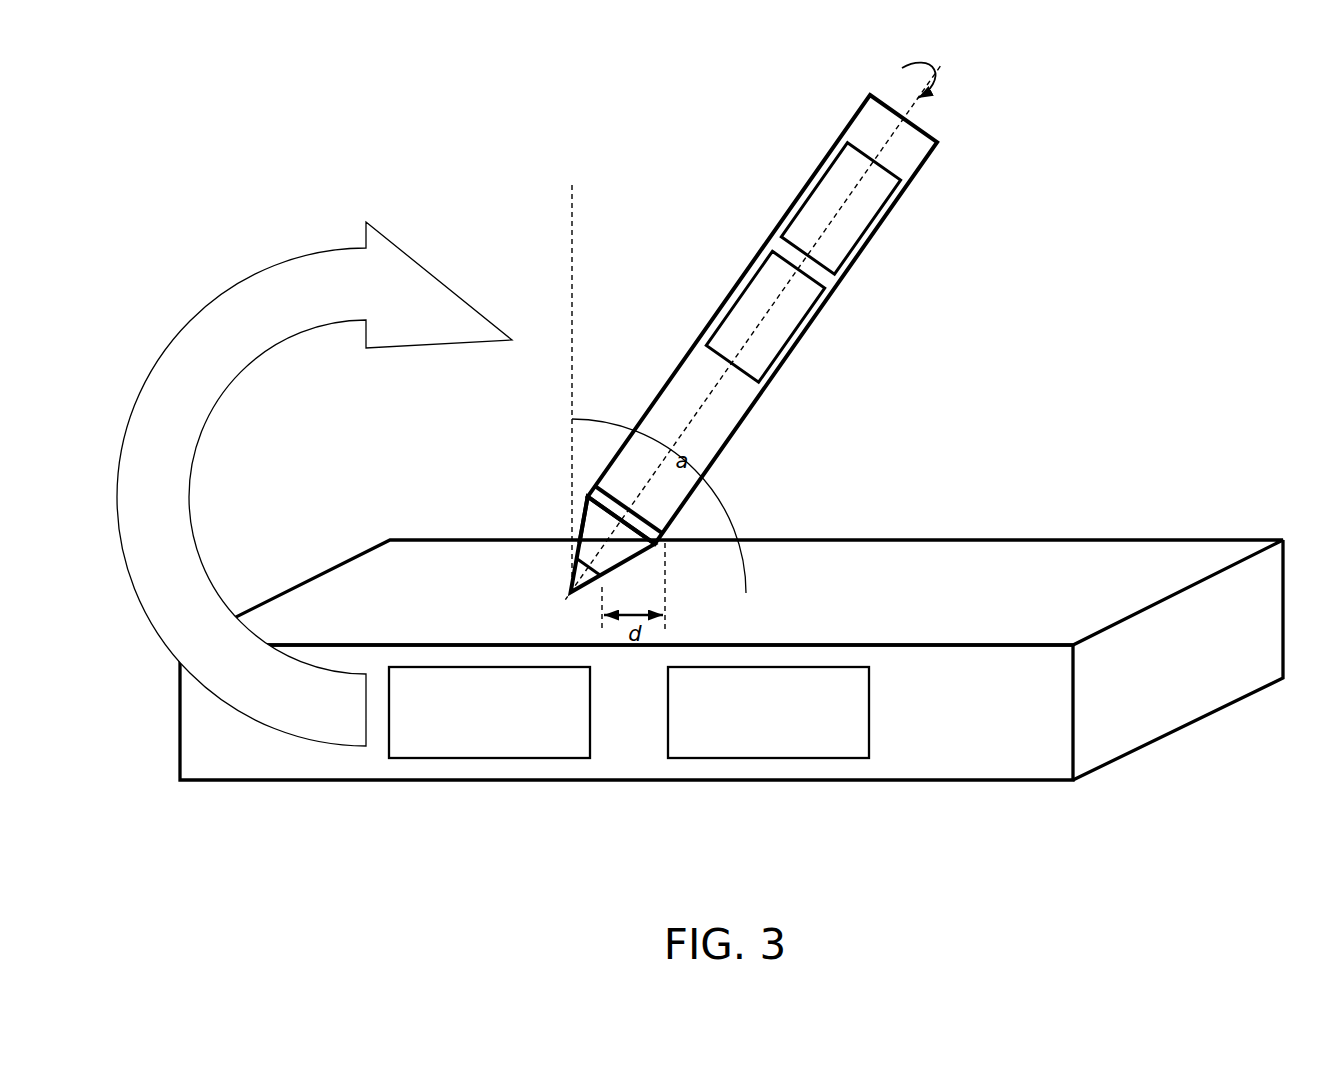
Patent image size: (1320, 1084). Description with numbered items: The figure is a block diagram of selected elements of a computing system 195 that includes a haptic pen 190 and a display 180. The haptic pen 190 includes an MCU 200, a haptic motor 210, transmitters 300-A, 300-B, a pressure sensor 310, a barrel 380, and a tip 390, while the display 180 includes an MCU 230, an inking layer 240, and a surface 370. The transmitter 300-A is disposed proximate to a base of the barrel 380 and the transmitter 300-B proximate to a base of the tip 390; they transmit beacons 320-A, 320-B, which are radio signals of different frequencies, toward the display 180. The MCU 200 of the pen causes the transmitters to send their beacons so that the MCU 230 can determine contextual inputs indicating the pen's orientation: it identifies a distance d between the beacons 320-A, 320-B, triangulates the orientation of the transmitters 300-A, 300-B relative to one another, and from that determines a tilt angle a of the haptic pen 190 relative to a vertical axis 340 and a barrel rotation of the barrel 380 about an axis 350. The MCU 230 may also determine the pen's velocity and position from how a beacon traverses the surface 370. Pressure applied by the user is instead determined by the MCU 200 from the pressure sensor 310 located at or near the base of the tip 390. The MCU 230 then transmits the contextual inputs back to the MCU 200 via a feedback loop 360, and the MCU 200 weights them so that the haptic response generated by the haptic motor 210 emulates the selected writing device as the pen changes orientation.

The computing system 195 is at (269, 71).
The haptic pen 190 is at (826, 80).
The axis 350 is at (935, 70).
The vertical axis 340 is at (570, 371).
The MCU 200 is at (832, 201).
The haptic motor 210 is at (754, 311).
The barrel 380 is at (853, 288).
The feedback loop 360 is at (314, 484).
The transmitter 300-A is at (597, 486).
The transmitter 300-B is at (575, 557).
The tip 390 is at (580, 521).
The pressure sensor 310 is at (567, 589).
The beacon 320-A is at (669, 615).
The beacon 320-B is at (598, 615).
The surface 370 is at (1025, 583).
The display 180 is at (1203, 507).
The MCU 230 is at (489, 712).
The inking layer 240 is at (768, 712).